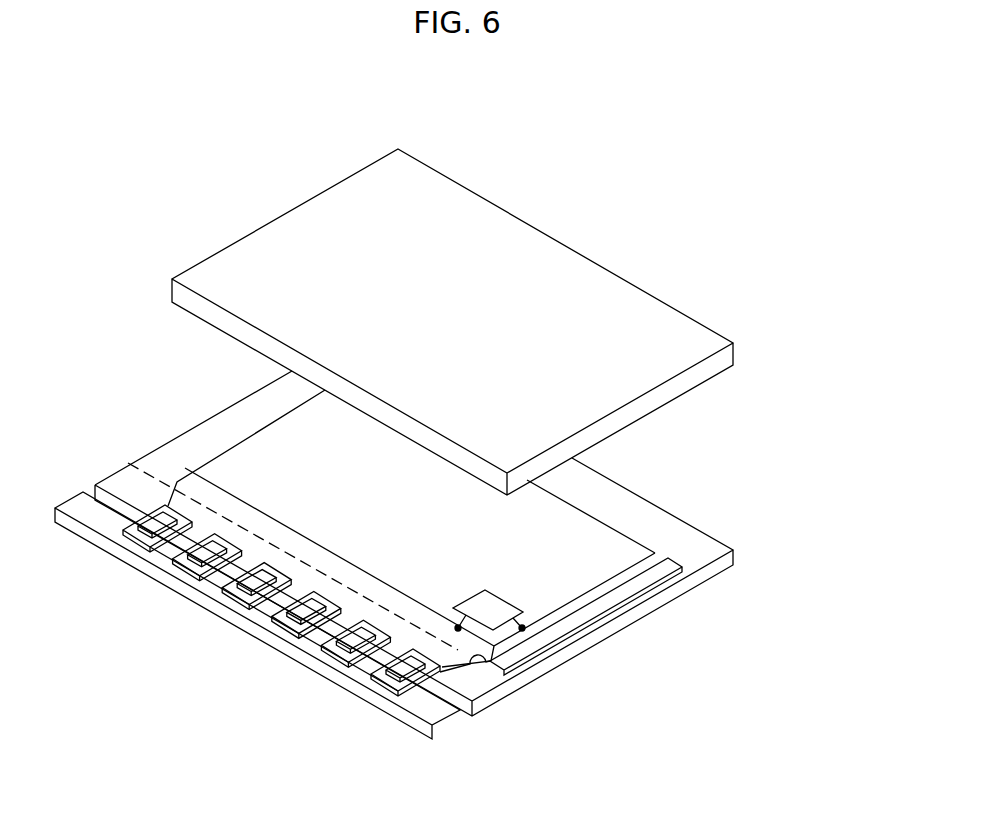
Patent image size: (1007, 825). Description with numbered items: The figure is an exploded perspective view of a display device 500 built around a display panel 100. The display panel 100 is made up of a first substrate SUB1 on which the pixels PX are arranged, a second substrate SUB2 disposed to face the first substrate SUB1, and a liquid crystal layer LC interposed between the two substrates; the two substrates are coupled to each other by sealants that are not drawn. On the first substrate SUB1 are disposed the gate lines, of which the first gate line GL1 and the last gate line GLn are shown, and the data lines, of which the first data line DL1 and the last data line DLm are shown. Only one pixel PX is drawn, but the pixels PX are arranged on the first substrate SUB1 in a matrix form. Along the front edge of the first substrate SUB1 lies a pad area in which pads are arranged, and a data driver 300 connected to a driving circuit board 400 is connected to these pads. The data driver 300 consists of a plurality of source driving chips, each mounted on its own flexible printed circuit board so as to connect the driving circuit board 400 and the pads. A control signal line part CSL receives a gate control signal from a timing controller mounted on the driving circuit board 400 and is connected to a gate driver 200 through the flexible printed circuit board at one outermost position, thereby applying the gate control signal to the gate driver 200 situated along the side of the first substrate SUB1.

The display panel 100 is at (812, 352).
The display device 500 is at (582, 191).
The first substrate SUB1 is at (733, 560).
The second substrate SUB2 is at (731, 357).
The liquid crystal layer LC is at (684, 470).
The data line DLm is at (225, 448).
The data line DL1 is at (598, 579).
The gate line GL1 is at (302, 533).
The gate line GLn is at (593, 518).
The pixel PX is at (489, 610).
The gate driver 200 is at (657, 572).
The control signal line part CSL is at (492, 672).
The data driver 300 is at (251, 623).
The driving circuit board 400 is at (450, 720).